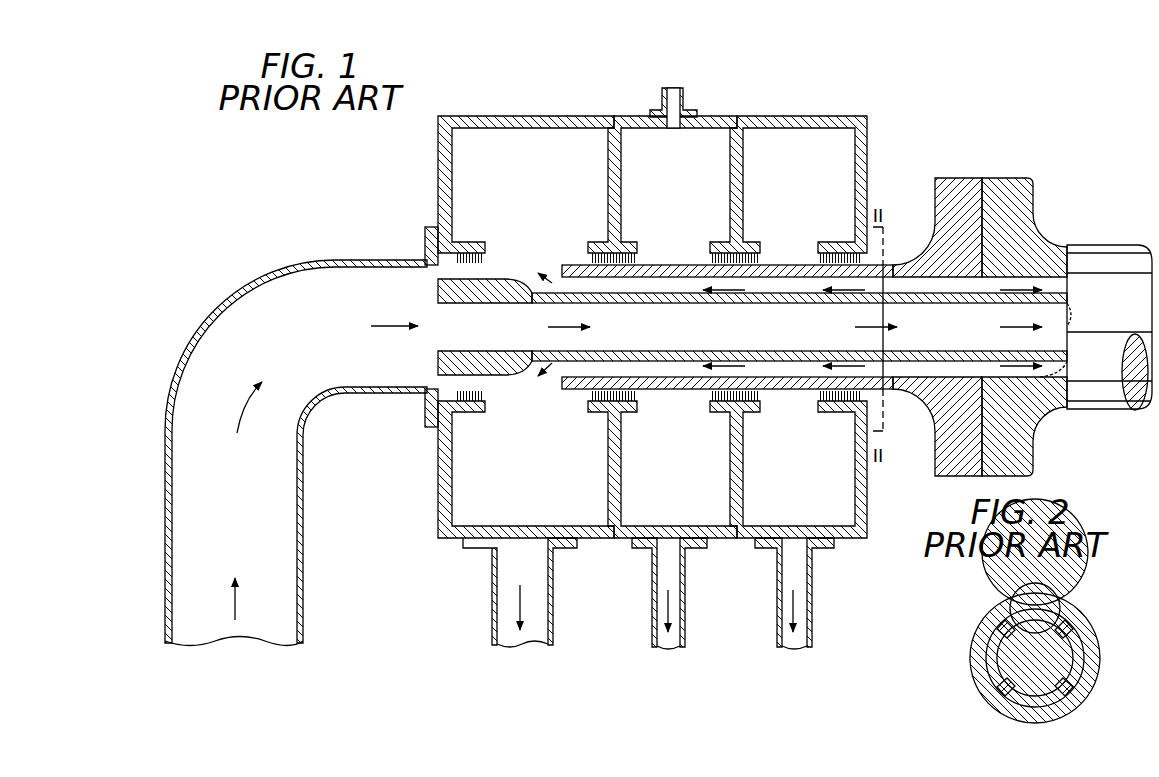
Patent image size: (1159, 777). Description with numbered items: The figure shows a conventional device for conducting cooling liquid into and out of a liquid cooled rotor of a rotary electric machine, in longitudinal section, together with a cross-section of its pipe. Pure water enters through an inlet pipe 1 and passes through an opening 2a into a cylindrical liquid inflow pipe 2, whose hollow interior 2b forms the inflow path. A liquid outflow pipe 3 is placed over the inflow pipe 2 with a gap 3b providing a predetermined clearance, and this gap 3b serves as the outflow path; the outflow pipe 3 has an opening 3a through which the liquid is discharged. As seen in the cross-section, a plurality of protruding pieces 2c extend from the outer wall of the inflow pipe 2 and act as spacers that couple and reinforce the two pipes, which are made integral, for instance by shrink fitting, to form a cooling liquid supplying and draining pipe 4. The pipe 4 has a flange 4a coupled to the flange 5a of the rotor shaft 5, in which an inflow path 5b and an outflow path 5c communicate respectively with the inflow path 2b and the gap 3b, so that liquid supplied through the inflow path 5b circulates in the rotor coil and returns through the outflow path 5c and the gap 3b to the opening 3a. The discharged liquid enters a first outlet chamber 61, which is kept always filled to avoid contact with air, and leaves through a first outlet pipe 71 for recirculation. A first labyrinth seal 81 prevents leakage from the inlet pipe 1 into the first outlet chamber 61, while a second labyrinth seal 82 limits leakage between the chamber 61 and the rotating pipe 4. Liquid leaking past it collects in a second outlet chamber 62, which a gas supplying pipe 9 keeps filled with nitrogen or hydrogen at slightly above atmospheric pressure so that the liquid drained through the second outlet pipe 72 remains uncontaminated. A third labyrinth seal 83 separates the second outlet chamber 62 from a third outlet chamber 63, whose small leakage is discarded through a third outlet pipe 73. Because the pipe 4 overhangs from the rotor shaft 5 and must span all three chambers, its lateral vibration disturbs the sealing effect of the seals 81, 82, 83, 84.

In FIG. 1, the inlet pipe 1 is at (305, 528).
In FIG. 2, the inlet pipe 1 is at (1023, 600).
In FIG. 1, the liquid inflow pipe 2 is at (532, 290).
In FIG. 2, the liquid inflow pipe 2 is at (1030, 700).
In FIG. 1, the opening 2a is at (436, 335).
In FIG. 1, the hollow interior 2b is at (478, 345).
In FIG. 2, the hollow interior 2b is at (1003, 676).
In FIG. 2, the protruding pieces 2c is at (992, 650).
In FIG. 1, the liquid outflow pipe 3 is at (680, 265).
In FIG. 2, the liquid outflow pipe 3 is at (1098, 657).
In FIG. 1, the opening 3a is at (560, 291).
In FIG. 1, the gap 3b is at (645, 348).
In FIG. 2, the gap 3b is at (1093, 695).
In FIG. 2, the cooling liquid supplying and draining pipe 4 is at (1095, 618).
In FIG. 1, the flange 4a is at (945, 178).
In FIG. 1, the rotor shaft 5 is at (1100, 245).
In FIG. 1, the flange 5a is at (1014, 178).
In FIG. 1, the inflow path 5b is at (1068, 308).
In FIG. 1, the outflow path 5c is at (1045, 376).
In FIG. 1, the gas supplying pipe 9 is at (686, 100).
In FIG. 1, the first outlet chamber 61 is at (542, 130).
In FIG. 1, the second outlet chamber 62 is at (642, 140).
In FIG. 1, the third outlet chamber 63 is at (805, 140).
In FIG. 1, the first outlet pipe 71 is at (492, 590).
In FIG. 1, the second outlet pipe 72 is at (655, 610).
In FIG. 1, the third outlet pipe 73 is at (778, 608).
In FIG. 1, the first labyrinth seal 81 is at (492, 262).
In FIG. 1, the second labyrinth seal 82 is at (638, 262).
In FIG. 1, the third labyrinth seal 83 is at (758, 262).
In FIG. 1, the labyrinth seal 84 is at (820, 262).